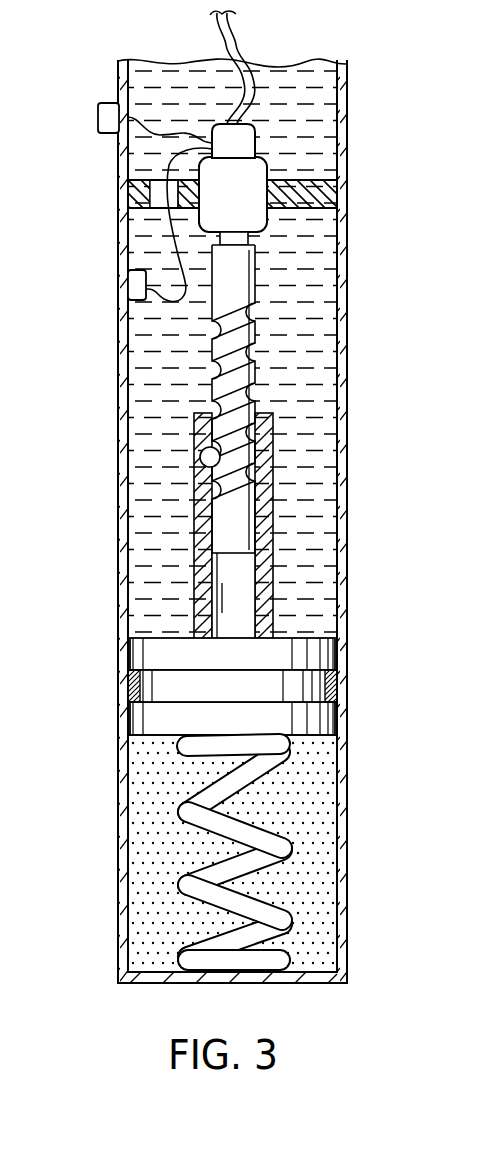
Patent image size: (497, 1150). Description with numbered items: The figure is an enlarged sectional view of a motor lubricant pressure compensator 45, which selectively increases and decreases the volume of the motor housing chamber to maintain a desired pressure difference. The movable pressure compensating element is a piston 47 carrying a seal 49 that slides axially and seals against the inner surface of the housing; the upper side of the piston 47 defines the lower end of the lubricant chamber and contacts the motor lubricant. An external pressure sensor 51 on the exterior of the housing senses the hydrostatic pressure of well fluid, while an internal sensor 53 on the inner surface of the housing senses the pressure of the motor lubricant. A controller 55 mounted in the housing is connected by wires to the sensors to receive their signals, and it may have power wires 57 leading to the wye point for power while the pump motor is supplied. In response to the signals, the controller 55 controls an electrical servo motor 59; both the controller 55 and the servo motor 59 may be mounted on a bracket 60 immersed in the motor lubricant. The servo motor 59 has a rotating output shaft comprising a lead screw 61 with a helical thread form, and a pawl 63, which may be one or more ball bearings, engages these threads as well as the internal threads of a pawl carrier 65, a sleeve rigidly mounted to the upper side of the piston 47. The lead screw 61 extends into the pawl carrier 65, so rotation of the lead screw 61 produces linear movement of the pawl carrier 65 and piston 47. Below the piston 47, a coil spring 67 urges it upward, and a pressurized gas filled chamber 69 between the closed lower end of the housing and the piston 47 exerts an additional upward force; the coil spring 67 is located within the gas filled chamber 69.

The pressure compensator 45 is at (365, 352).
The piston 47 is at (148, 655).
The seal 49 is at (128, 688).
The external pressure sensor 51 is at (98, 115).
The internal sensor 53 is at (130, 292).
The controller 55 is at (247, 147).
The power wires 57 is at (238, 40).
The electrical servo motor 59 is at (257, 201).
The bracket 60 is at (313, 207).
The lead screw 61 is at (210, 392).
The pawl 63 is at (201, 458).
The pawl carrier 65 is at (208, 563).
The coil spring 67 is at (183, 817).
The gas filled chamber 69 is at (323, 853).